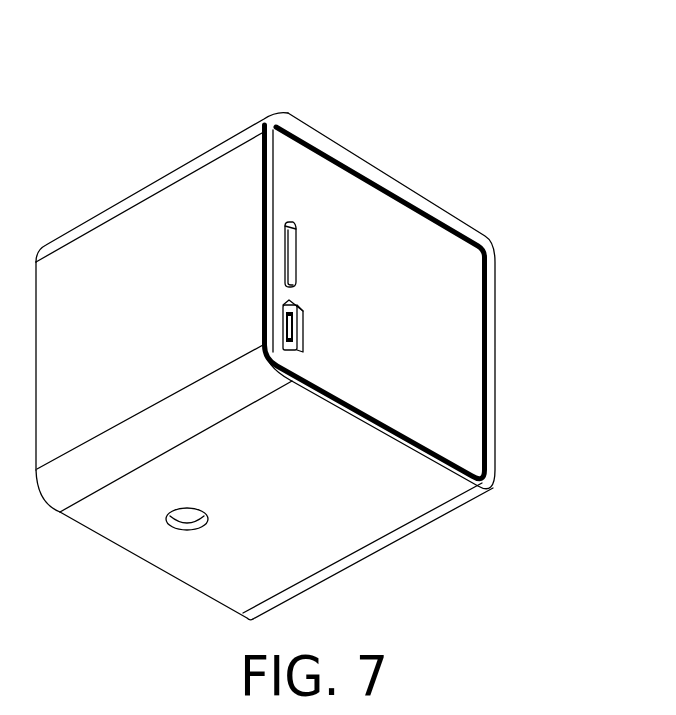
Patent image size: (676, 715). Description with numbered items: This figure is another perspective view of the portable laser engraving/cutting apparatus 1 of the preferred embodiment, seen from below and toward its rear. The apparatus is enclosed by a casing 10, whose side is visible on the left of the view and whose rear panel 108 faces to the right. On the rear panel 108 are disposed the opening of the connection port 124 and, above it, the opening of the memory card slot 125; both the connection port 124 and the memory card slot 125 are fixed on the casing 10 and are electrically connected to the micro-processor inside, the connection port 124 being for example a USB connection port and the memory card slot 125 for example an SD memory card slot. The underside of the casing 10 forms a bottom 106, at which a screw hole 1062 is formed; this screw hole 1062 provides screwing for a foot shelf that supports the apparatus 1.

The portable laser engraving/cutting apparatus 1 is at (247, 72).
The casing 10 is at (153, 190).
The bottom 106 is at (397, 507).
The screw hole 1062 is at (185, 522).
The rear panel 108 is at (432, 410).
The connection port 124 is at (300, 330).
The memory card slot 125 is at (294, 260).